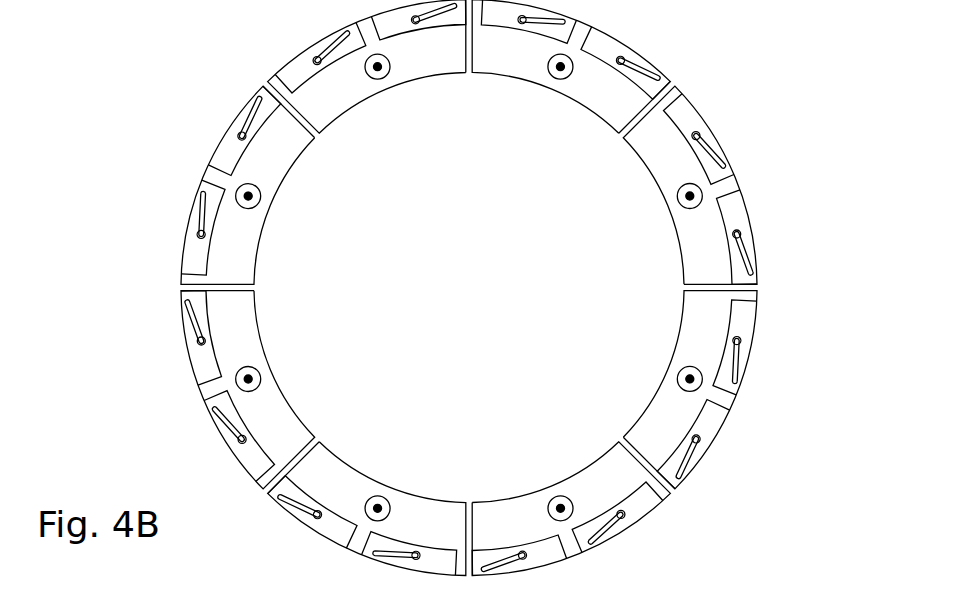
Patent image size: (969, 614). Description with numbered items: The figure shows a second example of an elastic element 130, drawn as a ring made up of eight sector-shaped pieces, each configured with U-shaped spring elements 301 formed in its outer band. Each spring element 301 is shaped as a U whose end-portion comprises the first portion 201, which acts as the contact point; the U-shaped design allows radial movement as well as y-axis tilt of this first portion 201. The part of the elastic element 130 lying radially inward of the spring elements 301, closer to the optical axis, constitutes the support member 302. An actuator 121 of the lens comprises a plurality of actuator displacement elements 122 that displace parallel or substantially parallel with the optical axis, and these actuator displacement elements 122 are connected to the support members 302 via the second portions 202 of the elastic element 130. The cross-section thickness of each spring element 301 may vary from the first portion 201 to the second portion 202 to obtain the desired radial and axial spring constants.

The actuator 121 is at (551, 80).
The actuator displacement element 122 is at (565, 84).
The elastic element 130 is at (731, 185).
The spring element 301 is at (760, 243).
The support member 302 is at (242, 250).
The first portion 201 is at (745, 345).
The second portion 202 is at (728, 384).